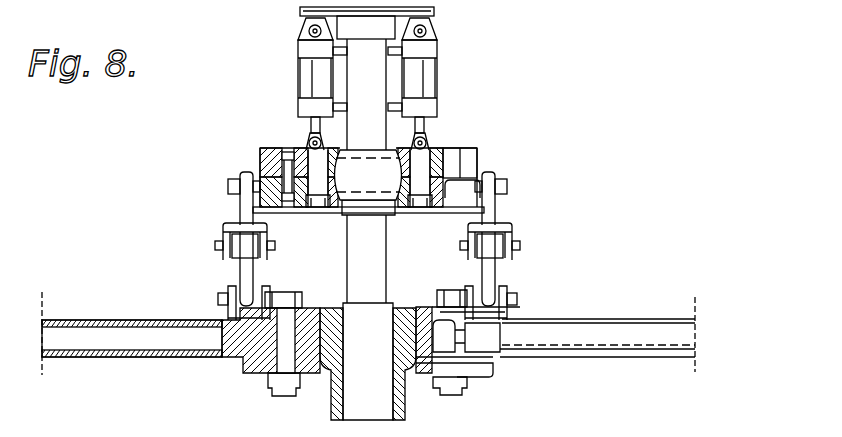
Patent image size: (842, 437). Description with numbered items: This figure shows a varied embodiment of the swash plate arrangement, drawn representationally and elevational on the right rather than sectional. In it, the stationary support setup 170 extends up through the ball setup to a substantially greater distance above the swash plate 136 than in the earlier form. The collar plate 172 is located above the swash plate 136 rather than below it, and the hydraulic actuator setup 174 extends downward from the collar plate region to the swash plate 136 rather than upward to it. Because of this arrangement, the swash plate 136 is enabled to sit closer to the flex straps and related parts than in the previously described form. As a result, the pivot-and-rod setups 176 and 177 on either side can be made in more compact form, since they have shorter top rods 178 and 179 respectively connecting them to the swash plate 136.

The stationary support setup 170 is at (378, 258).
The collar plate 172 is at (434, 11).
The hydraulic actuator setup 174 is at (298, 72).
The swash plate 136 is at (476, 147).
The pivot-and-rod setup 176 is at (225, 226).
The pivot-and-rod setup 177 is at (512, 230).
The top rod 178 is at (240, 202).
The top rod 179 is at (497, 213).